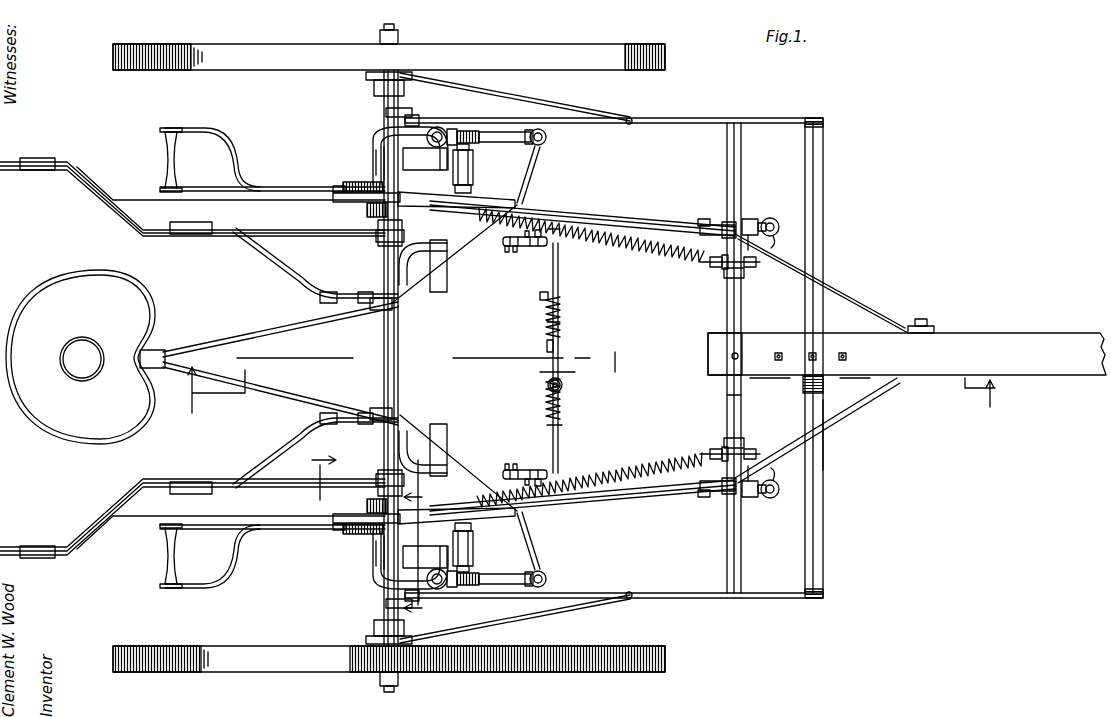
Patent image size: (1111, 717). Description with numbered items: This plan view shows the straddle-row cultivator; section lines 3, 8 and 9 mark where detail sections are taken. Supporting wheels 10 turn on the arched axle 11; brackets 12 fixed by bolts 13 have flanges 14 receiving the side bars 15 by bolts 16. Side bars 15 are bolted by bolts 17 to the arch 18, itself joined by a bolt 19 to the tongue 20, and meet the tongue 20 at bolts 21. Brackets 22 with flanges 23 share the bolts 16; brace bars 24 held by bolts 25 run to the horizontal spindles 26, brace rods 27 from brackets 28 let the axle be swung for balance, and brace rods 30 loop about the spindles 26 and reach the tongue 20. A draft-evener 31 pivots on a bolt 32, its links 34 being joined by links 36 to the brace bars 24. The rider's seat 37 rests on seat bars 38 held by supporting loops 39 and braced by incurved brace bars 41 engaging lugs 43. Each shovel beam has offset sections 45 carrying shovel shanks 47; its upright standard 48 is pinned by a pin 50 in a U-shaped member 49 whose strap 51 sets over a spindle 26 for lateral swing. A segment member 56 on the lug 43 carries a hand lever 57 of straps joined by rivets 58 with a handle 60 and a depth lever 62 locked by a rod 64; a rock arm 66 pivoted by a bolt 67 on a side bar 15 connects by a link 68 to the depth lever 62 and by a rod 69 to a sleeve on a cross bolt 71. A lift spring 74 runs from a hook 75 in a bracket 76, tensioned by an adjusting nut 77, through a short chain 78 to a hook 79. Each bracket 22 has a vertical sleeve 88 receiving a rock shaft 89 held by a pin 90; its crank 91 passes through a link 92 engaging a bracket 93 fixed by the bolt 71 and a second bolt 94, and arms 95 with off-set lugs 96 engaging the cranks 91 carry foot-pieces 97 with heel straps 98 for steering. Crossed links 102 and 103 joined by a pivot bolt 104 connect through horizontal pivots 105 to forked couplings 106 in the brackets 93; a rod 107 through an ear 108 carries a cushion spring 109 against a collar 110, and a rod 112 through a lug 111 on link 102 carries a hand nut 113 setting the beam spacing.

The section line 3— 3 is at (583, 382).
The section line 8— 8 is at (418, 544).
The section line 9 is at (324, 469).
The supporting wheels 10 is at (260, 660).
The arched axle 11 is at (399, 322).
The brackets 12 is at (380, 243).
The bolts 13 is at (527, 130).
The upwardly extending flanges 14 is at (355, 202).
The side bars 15 is at (700, 226).
The bolts 16 is at (370, 212).
The bolts 17 is at (752, 218).
The arch 18 is at (727, 406).
The bolt 19 is at (732, 356).
The tongue 20 is at (955, 345).
The bolts 21 is at (909, 326).
The brackets 22 is at (378, 140).
The upwardly projecting flanges 23 is at (340, 200).
The brace bars 24 is at (664, 118).
The bolts 25 is at (405, 107).
The horizontal spindles 26 is at (742, 152).
The brace rods 27 is at (540, 108).
The brackets 28 is at (368, 77).
The brace rods 30 is at (838, 290).
The draft-evener 31 is at (812, 437).
The bolt 32 is at (810, 352).
The links 34 is at (824, 127).
The links 36 is at (790, 120).
The rider's seat 37 is at (80, 357).
The horizontal bars 38 is at (276, 322).
The supporting loops 39 is at (372, 311).
The incurved brace bars 41 is at (510, 208).
The upright brackets or lugs 43 is at (470, 566).
The sections 45 is at (243, 234).
The shanks 47 is at (40, 170).
The upright standards 48 is at (779, 223).
The U-shaped members 49 is at (758, 353).
The pins 50 is at (786, 377).
The strap 51 is at (721, 362).
The segment rack member 56 is at (474, 168).
The hand lever 57 is at (224, 187).
The rivets 58 is at (262, 187).
The grip or handle 60 is at (172, 158).
The depth regulating lever 62 is at (356, 182).
The rod 64 is at (400, 152).
The rock arm 66 is at (704, 226).
The bolt 67 is at (708, 262).
The connecting rod or link 68 is at (606, 220).
The link or rod 69 is at (590, 212).
The cross bolt 71 is at (528, 247).
The lift spring 74 is at (664, 258).
The hook 75 is at (722, 270).
The bracket or lug 76 is at (740, 440).
The adjusting nut 77 is at (756, 262).
The short chain 78 is at (490, 226).
The hook 79 is at (378, 234).
The vertical sleeve 88 is at (468, 131).
The rock shaft 89 is at (452, 129).
The pin 90 is at (434, 128).
The crank portion 91 is at (543, 142).
The link 92 is at (530, 165).
The bracket 93 is at (515, 252).
The second bolt 94 is at (507, 252).
The arms 95 is at (478, 553).
The off-set lug 96 is at (500, 132).
The foot-piece 97 is at (440, 288).
The heel strap 98 is at (400, 262).
The link 102 is at (566, 261).
The link 103 is at (566, 421).
The pivot bolt 104 is at (559, 346).
The horizontal pivots 105 is at (548, 246).
The forked couplings 106 is at (538, 247).
The rod 107 is at (547, 347).
The ear or bracket 108 is at (540, 298).
The cushion spring 109 is at (561, 316).
The collar 110 is at (547, 330).
The rearwardly bent portion or lug 111 is at (561, 385).
The rod 112 is at (548, 388).
The nut 113 is at (540, 378).